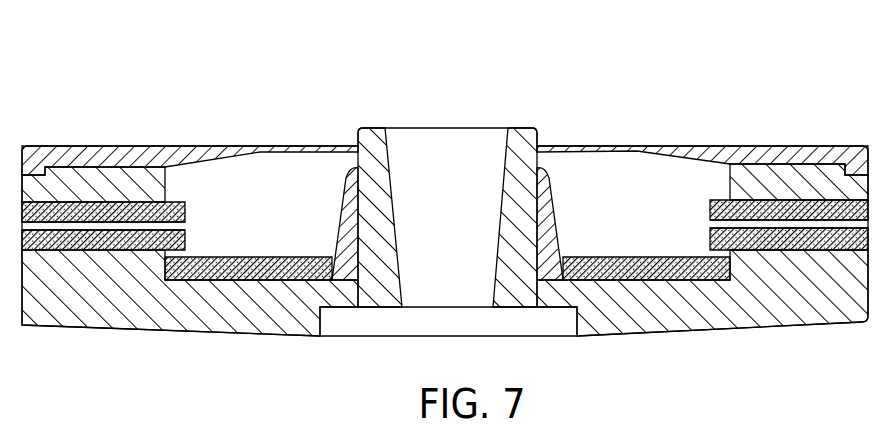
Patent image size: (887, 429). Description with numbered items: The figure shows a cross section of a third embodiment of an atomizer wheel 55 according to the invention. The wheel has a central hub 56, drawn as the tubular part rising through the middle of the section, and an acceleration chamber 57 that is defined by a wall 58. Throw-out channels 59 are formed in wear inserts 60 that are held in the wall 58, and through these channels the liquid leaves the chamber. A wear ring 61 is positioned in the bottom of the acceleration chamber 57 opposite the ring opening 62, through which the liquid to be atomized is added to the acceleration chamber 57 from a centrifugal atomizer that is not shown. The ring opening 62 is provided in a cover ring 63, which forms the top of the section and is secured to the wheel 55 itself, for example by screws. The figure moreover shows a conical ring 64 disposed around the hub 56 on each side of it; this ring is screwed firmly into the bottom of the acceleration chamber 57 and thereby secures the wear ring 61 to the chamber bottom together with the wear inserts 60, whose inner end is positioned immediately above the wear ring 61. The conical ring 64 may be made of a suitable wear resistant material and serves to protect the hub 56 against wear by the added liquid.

The atomizer wheel 55 is at (460, 103).
The central hub 56 is at (517, 128).
The acceleration chamber 57 is at (605, 198).
The wall 58 is at (728, 177).
The throw-out channels 59 is at (832, 222).
The wear inserts 60 is at (715, 197).
The wear ring 61 is at (602, 258).
The ring opening 62 is at (598, 158).
The cover ring 63 is at (786, 152).
The conical ring 64 is at (557, 200).